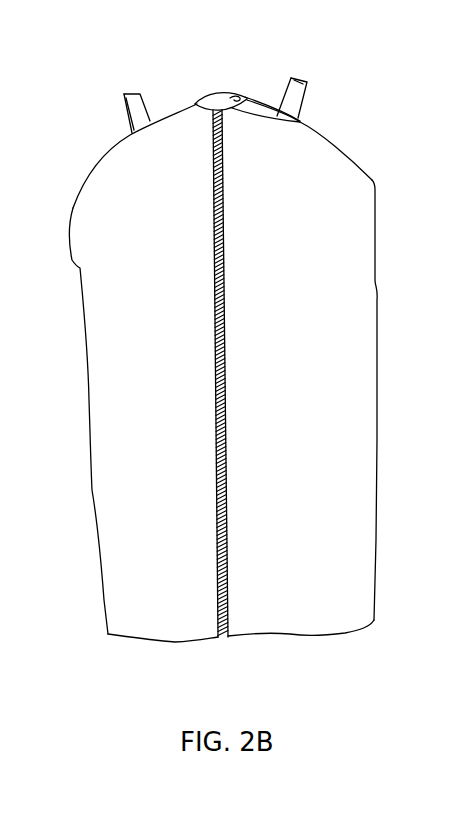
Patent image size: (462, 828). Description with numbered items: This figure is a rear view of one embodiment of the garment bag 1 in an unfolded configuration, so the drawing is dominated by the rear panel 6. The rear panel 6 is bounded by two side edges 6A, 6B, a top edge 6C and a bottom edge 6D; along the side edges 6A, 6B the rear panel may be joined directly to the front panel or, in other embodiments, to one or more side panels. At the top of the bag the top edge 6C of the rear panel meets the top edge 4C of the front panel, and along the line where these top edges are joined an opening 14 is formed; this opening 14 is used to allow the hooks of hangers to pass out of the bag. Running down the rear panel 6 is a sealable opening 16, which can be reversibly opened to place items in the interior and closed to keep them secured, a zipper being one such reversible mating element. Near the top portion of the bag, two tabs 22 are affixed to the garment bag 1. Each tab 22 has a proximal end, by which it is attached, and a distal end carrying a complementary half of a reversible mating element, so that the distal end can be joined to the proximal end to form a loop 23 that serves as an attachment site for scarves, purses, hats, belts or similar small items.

The garment bag 1 is at (72, 130).
The top edge of front panel 4C is at (208, 91).
The opening 14 is at (228, 97).
The sealable opening 16 is at (224, 200).
The tab 22 is at (126, 100).
The loop 23 is at (128, 115).
The rear panel 6 is at (237, 385).
The side edge of rear panel 6A is at (377, 482).
The side edge of rear panel 6B is at (85, 475).
The top edge of rear panel 6C is at (300, 120).
The bottom edge of rear panel 6D is at (300, 640).